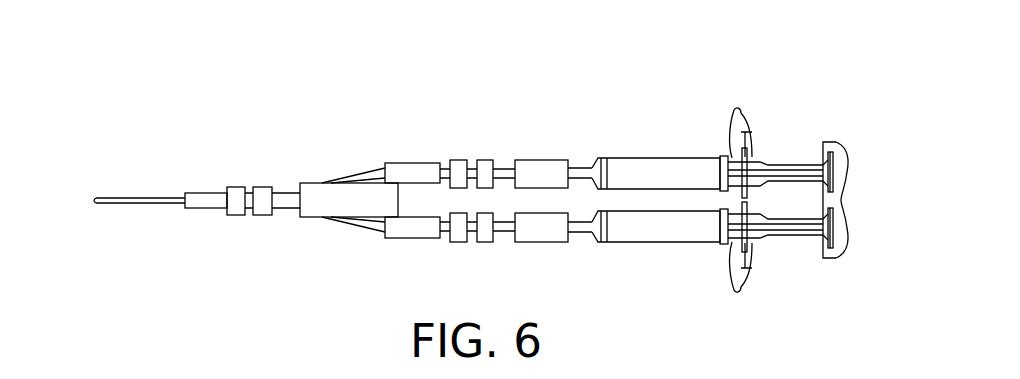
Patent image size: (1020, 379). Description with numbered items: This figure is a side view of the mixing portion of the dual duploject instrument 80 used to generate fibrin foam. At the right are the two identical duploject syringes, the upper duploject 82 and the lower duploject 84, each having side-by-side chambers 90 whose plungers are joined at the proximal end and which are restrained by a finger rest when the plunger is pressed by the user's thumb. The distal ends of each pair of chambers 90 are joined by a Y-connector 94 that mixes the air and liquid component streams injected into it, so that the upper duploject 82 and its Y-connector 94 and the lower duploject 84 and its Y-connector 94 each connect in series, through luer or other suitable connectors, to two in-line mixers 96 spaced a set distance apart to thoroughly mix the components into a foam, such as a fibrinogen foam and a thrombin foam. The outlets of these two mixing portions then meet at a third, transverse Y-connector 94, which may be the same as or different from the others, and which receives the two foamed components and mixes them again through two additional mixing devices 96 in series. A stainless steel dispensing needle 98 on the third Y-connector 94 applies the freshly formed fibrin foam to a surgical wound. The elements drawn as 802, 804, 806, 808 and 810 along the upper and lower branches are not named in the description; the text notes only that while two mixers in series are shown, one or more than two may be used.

The dual duploject instrument 80 is at (712, 95).
The upper duploject syringe 82 is at (772, 162).
The lower duploject syringe 84 is at (778, 243).
The chamber 90 is at (658, 158).
The Y-connector 94 is at (352, 209).
The in-line mixer 96 is at (265, 186).
The dispensing needle 98 is at (140, 197).
The first mixing chamber 802 is at (537, 160).
The second mixing chamber 804 is at (545, 243).
The first flow restrictor 806 is at (460, 160).
The second flow restrictor 808 is at (460, 243).
The inlet fitting 810 is at (410, 162).